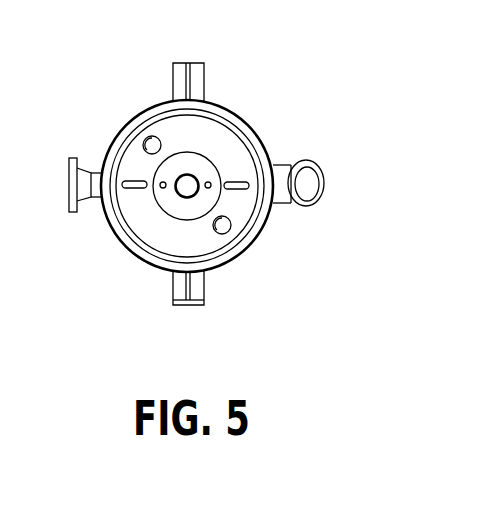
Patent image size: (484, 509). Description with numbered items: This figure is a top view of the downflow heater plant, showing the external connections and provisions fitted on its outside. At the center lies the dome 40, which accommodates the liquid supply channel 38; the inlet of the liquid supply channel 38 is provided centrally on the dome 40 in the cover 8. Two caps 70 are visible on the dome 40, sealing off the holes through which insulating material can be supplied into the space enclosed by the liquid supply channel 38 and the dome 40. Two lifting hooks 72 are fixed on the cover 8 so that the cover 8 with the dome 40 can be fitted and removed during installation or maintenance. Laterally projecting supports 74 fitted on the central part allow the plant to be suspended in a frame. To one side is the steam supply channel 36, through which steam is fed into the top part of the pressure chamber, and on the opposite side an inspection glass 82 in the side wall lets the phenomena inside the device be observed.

The cover 8 is at (220, 138).
The steam supply channel 36 is at (95, 199).
The liquid supply channel 38 is at (185, 176).
The dome 40 is at (180, 210).
The caps 70 is at (82, 287).
The lifting hooks 72 is at (132, 180).
The supports 74 is at (197, 68).
The inspection glass 82 is at (309, 178).